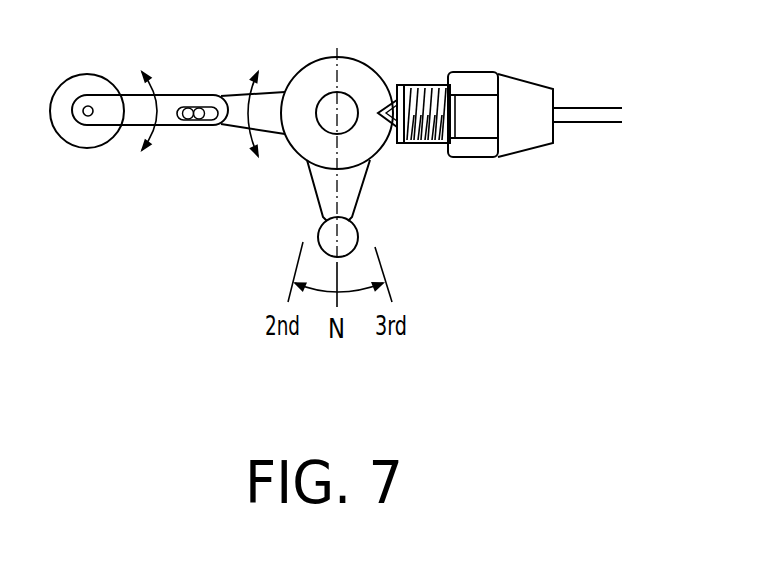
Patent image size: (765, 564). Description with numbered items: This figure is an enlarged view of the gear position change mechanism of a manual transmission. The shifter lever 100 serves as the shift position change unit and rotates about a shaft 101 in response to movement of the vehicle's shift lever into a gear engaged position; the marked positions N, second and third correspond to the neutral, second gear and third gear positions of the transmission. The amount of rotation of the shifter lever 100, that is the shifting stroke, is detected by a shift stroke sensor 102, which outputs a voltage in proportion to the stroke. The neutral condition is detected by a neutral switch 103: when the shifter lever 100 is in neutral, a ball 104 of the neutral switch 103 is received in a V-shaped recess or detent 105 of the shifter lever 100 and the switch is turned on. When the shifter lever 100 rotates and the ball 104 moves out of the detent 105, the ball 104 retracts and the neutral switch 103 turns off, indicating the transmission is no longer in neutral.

The shifter lever 100 is at (352, 192).
The shaft 101 is at (327, 107).
The shift stroke sensor 102 is at (88, 82).
The neutral switch 103 is at (478, 88).
The ball 104 is at (412, 145).
The V-shaped recess (detent) 105 is at (397, 100).